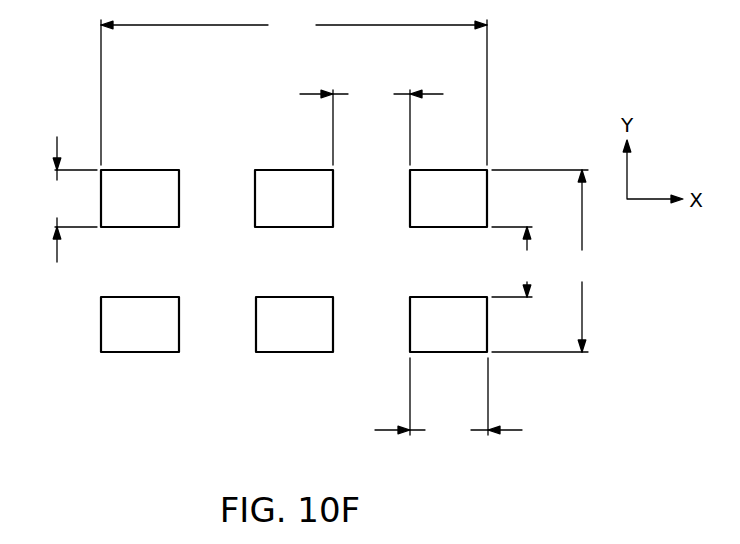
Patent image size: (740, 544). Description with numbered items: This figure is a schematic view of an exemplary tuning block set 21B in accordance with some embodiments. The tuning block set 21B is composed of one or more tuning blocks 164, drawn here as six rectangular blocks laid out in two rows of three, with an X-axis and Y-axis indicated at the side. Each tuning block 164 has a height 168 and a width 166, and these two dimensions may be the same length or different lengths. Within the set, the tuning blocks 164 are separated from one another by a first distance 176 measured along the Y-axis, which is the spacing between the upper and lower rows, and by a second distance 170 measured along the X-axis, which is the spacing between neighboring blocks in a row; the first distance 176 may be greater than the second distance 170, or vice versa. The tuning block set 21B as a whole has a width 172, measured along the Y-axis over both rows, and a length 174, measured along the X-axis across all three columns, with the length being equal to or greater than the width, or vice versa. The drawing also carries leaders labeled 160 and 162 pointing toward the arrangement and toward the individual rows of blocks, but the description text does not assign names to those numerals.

The tuning block set 21B is at (101, 408).
The array of elements 160 is at (208, 160).
The row of elements 162 is at (88, 290).
The tuning block 164 is at (143, 170).
The width 166 is at (448, 400).
The height 168 is at (64, 199).
The second distance 170 is at (371, 123).
The width 172 is at (546, 261).
The length 174 is at (294, 89).
The first distance 176 is at (519, 262).